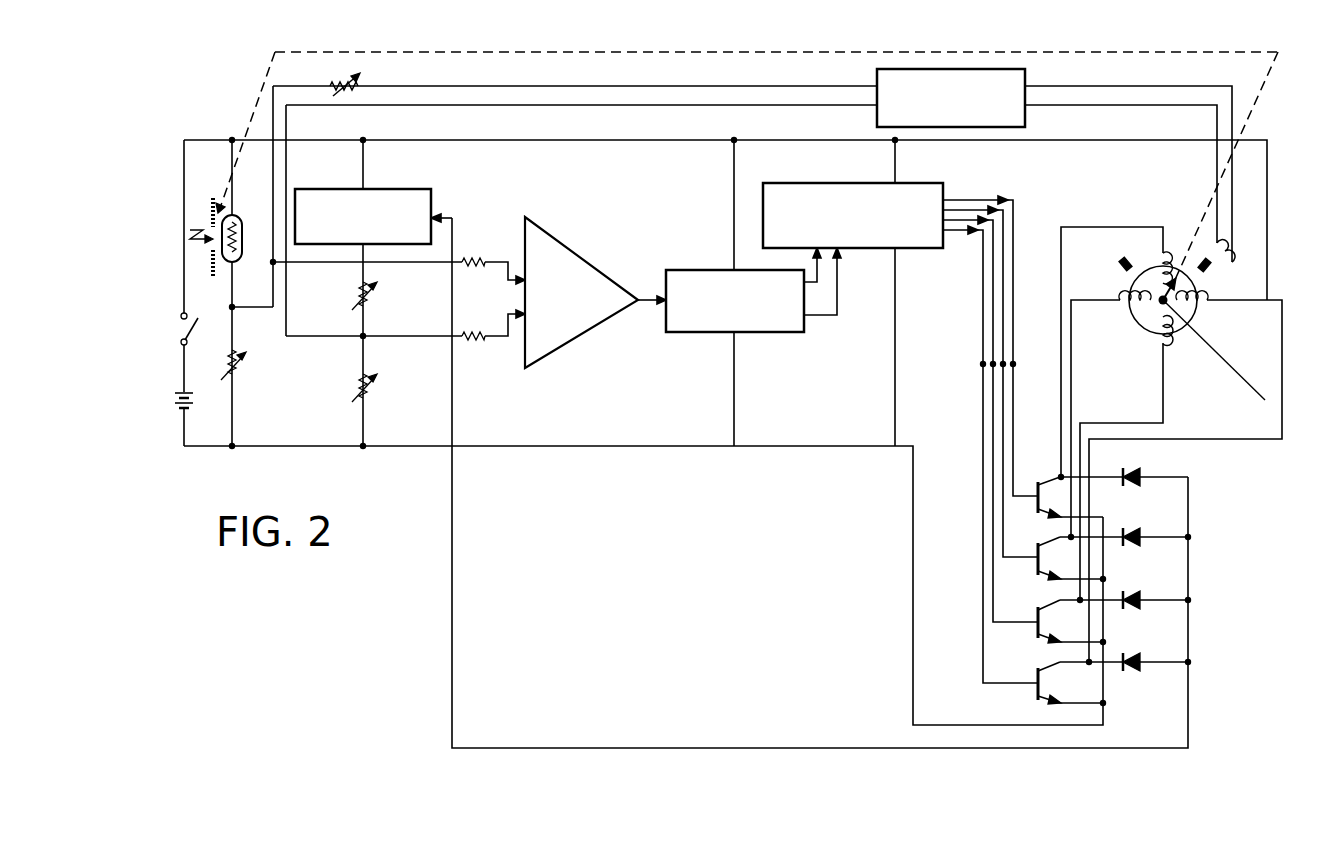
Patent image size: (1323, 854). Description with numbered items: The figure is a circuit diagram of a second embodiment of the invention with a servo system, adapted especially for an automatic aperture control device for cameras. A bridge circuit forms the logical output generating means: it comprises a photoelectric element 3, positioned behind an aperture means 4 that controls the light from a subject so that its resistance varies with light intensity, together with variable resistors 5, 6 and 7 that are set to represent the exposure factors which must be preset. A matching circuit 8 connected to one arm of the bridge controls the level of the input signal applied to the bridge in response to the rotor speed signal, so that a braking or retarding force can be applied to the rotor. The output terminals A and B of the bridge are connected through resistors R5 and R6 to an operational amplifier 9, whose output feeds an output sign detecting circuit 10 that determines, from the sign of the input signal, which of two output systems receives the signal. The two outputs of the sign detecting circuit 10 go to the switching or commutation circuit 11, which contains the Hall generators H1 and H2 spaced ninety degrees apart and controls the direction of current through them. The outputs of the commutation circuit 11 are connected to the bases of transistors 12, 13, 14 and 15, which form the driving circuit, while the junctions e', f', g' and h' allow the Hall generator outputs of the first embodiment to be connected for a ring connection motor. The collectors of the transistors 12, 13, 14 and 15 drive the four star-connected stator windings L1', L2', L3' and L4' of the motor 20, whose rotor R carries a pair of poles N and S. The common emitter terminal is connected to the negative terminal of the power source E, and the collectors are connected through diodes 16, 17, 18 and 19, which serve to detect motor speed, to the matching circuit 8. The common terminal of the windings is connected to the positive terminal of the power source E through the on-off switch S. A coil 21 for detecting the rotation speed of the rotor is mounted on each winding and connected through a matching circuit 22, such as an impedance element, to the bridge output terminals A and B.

The photoelectric element 3 is at (241, 216).
The aperture means 4 is at (207, 203).
The variable resistor 5 is at (242, 364).
The variable resistor 6 is at (372, 297).
The variable resistor 7 is at (355, 387).
The matching circuit 8 is at (431, 197).
The operational amplifier 9 is at (581, 336).
The output sign detecting circuit 10 is at (762, 334).
The switching or commutation circuit 11 is at (916, 250).
The transistor 12 is at (1038, 512).
The transistor 13 is at (1038, 573).
The transistor 14 is at (1038, 636).
The transistor 15 is at (1038, 699).
The diode 16 is at (1140, 477).
The diode 17 is at (1140, 537).
The diode 18 is at (1140, 600).
The diode 19 is at (1140, 662).
The motor 20 is at (1166, 301).
The coil 21 is at (1226, 251).
The matching circuit 22 is at (877, 77).
The output terminal A is at (234, 303).
The output terminal B is at (360, 338).
The on-off switch S is at (182, 320).
The power source E is at (178, 401).
The resistor R5 is at (472, 259).
The resistor R6 is at (472, 339).
The Hall generator H1 is at (1124, 259).
The Hall generator H2 is at (1212, 273).
The stator winding L1' is at (1180, 243).
The stator winding L2' is at (1109, 283).
The stator winding L3' is at (1190, 345).
The stator winding L4' is at (1213, 311).
The rotor R is at (1131, 313).
The junction e' is at (1032, 355).
The junction f' is at (1018, 343).
The junction g' is at (970, 348).
The junction h' is at (958, 373).